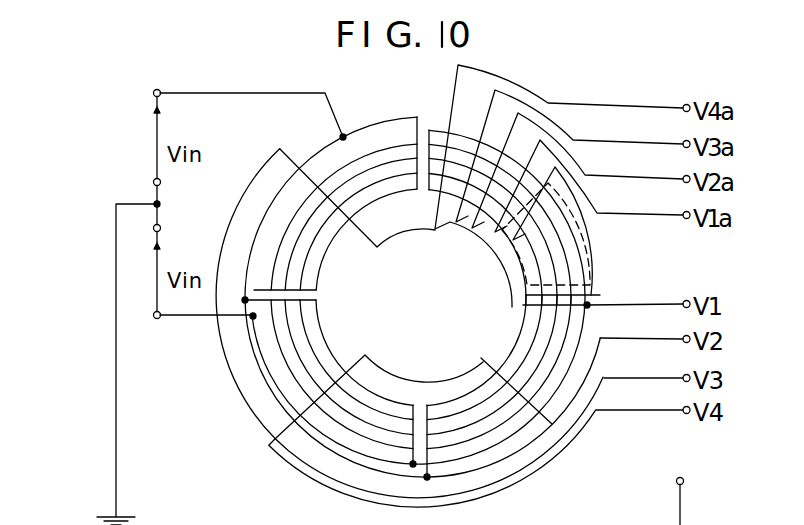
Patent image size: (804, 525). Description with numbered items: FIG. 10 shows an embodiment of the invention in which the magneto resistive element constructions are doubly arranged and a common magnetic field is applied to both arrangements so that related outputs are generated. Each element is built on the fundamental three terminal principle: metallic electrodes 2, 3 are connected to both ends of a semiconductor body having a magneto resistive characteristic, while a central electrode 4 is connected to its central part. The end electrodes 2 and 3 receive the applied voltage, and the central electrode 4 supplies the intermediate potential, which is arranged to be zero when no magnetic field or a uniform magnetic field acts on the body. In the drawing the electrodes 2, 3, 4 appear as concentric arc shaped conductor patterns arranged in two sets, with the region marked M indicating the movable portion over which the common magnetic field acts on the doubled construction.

The metallic electrode 2 is at (429, 130).
The metallic electrode 3 is at (417, 190).
The central electrode 4 is at (343, 214).
The movable electrode M is at (513, 252).